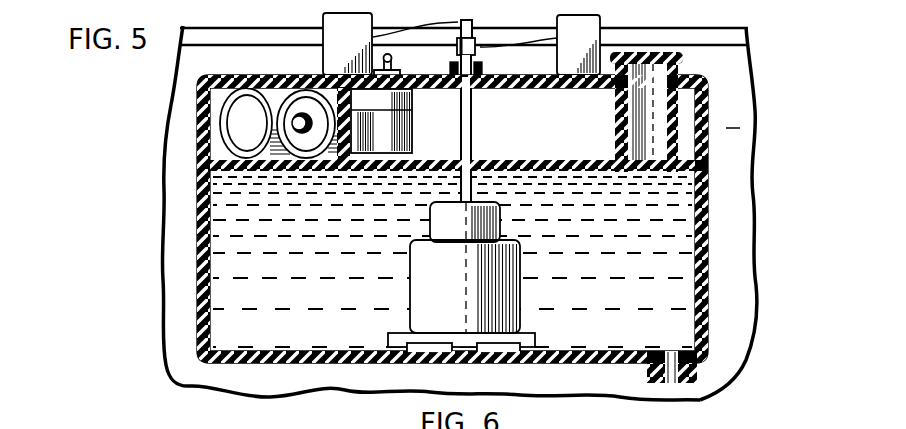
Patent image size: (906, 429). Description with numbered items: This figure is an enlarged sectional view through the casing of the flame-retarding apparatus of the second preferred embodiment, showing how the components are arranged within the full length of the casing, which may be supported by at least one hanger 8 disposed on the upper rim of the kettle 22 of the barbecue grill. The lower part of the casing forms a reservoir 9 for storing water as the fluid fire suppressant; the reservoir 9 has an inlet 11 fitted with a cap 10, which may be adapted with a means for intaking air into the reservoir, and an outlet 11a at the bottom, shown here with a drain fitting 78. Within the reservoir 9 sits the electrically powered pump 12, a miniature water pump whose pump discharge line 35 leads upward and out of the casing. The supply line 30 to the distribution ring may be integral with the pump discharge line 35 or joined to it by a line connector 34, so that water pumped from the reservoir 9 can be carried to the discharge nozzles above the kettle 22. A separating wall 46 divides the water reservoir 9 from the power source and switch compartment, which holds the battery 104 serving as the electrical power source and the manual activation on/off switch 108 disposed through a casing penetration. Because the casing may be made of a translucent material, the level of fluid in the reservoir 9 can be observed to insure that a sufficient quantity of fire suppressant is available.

The hanger 8 is at (333, 45).
The reservoir 9 is at (677, 284).
The cap 10 is at (683, 58).
The inlet 11 is at (644, 128).
The outlet 11a is at (670, 354).
The electrically powered pump 12 is at (520, 287).
The kettle 22 is at (732, 116).
The supply line 30 is at (390, 44).
The line connector 34 is at (540, 45).
The pump discharge line 35 is at (478, 62).
The separating wall 46 is at (526, 151).
The drain fitting 78 is at (667, 385).
The battery 104 is at (222, 113).
The on/off switch 108 is at (393, 57).